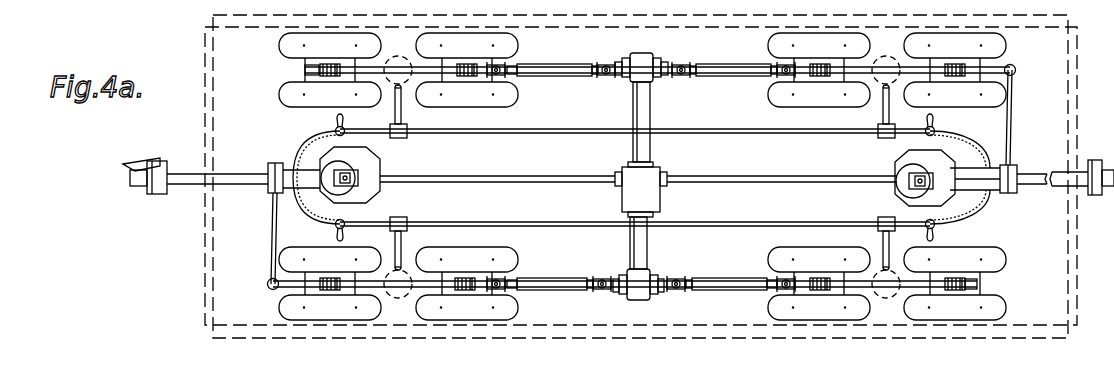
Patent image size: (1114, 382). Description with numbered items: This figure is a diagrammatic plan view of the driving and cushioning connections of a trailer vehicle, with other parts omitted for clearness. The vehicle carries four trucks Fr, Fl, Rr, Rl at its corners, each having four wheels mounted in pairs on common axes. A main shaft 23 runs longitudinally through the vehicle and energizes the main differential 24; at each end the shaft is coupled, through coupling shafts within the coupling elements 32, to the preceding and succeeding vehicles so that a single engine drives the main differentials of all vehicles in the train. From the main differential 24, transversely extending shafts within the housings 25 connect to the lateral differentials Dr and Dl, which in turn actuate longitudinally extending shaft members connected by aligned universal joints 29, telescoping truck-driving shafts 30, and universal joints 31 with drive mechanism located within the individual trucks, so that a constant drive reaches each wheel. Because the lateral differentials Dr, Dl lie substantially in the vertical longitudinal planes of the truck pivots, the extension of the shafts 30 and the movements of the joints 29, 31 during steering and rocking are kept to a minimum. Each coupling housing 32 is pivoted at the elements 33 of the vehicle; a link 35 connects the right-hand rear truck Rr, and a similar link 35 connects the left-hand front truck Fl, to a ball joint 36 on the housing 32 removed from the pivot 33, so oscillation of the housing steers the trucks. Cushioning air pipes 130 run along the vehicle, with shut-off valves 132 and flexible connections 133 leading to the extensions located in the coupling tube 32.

The main drive shaft 23 is at (525, 178).
The main differential 24 is at (655, 173).
The transverse shaft housing 25 is at (650, 115).
The universal joint 29 is at (604, 78).
The telescoping truck-driving shaft 30 is at (560, 57).
The universal joint 31 is at (505, 78).
The coupling housing 32 is at (178, 165).
The pivot element 33 is at (345, 195).
The link 35 is at (272, 205).
The ball joint 36 is at (268, 163).
The cushioning air pipe 130 is at (475, 133).
The shut-off valve 132 is at (345, 134).
The flexible connection 133 is at (300, 140).
The right lateral differential Dr is at (650, 56).
The left lateral differential Dl is at (646, 272).
The front right truck Fr is at (402, 56).
The front left truck Fl is at (392, 298).
The rear right truck Rr is at (890, 56).
The rear left truck Rl is at (892, 298).